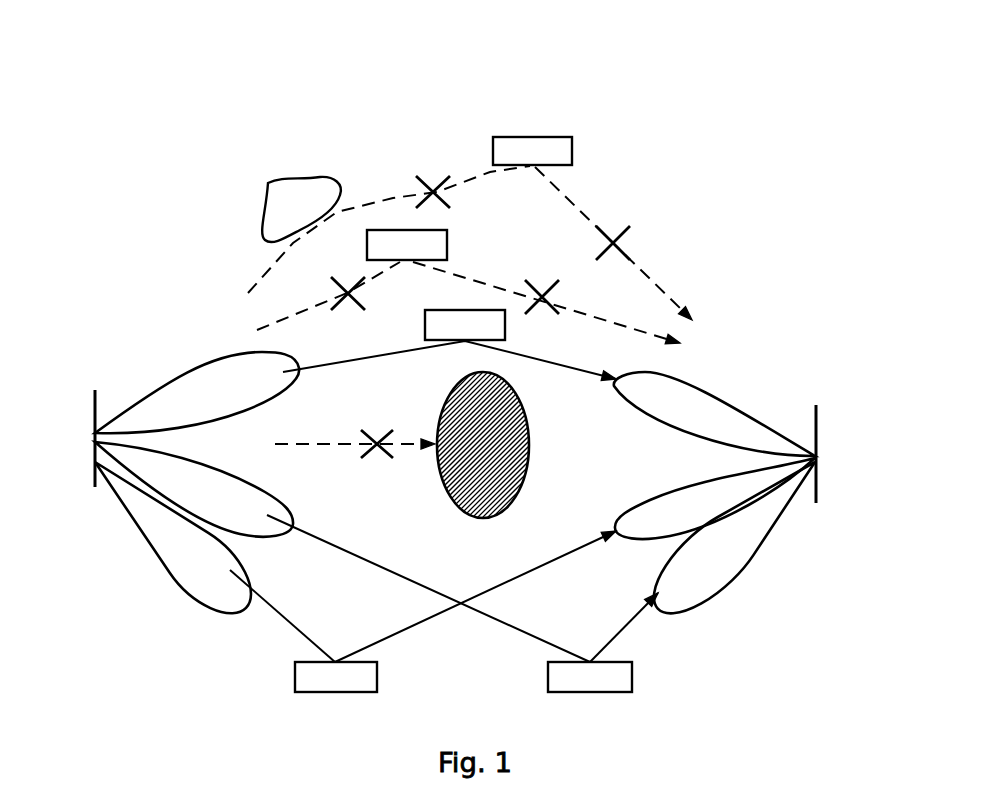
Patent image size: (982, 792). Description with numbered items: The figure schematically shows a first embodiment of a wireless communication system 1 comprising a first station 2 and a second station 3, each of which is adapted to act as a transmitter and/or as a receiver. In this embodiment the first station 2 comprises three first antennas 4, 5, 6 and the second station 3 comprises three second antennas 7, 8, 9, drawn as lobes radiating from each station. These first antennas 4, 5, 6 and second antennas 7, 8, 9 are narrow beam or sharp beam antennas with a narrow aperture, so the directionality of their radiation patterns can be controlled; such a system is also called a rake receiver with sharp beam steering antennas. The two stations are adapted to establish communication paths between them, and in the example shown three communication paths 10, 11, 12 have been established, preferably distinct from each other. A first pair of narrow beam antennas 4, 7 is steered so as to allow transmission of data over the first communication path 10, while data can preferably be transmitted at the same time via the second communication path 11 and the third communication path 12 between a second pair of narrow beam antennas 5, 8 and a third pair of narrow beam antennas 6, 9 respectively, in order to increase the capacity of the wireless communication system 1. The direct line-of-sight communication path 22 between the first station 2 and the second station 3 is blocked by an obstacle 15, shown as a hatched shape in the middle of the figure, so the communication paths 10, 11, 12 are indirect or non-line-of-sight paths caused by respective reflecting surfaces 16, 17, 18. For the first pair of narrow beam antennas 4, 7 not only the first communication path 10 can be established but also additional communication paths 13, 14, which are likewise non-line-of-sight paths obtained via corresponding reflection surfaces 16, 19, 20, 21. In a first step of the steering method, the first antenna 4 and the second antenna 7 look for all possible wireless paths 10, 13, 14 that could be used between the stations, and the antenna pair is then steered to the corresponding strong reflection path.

The wireless communication system 1 is at (638, 80).
The first station 2 is at (93, 470).
The second station 3 is at (818, 487).
The first antenna 4 is at (195, 366).
The first antenna 5 is at (288, 504).
The first antenna 6 is at (152, 562).
The second antenna 7 is at (711, 370).
The second antenna 8 is at (734, 580).
The second antenna 9 is at (662, 479).
The first communication path 10 is at (374, 360).
The second communication path 11 is at (353, 548).
The third communication path 12 is at (282, 618).
The additional communication path 13 is at (398, 197).
The additional communication path 14 is at (508, 292).
The obstacle 15 is at (527, 430).
The reflecting surface 16 is at (482, 340).
The reflecting surface 17 is at (594, 664).
The reflecting surface 18 is at (334, 664).
The reflection surface 19 is at (318, 217).
The reflection surface 20 is at (540, 166).
The reflection surface 21 is at (413, 260).
The direct line-of-sight communication path 22 is at (342, 442).